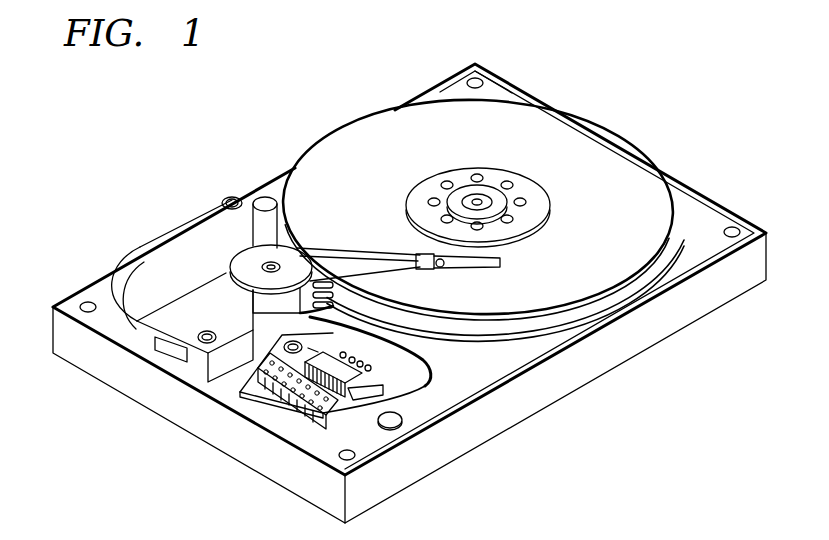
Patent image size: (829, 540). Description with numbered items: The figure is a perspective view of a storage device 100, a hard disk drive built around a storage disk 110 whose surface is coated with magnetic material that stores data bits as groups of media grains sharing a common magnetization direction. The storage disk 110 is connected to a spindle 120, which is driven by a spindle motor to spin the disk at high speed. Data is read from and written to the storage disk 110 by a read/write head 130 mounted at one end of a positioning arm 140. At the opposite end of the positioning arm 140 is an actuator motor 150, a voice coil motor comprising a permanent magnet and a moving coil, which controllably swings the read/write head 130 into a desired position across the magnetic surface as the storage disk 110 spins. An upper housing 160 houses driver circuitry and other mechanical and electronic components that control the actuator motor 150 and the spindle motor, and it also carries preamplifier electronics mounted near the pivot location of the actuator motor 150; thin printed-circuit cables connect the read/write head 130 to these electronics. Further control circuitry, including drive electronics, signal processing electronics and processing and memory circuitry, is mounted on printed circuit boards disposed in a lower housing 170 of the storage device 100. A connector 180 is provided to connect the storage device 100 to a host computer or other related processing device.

The storage device 100 is at (188, 116).
The storage disk 110 is at (597, 137).
The spindle 120 is at (497, 198).
The read/write head 130 is at (470, 262).
The positioning arm 140 is at (330, 247).
The actuator motor 150 is at (253, 290).
The upper housing 160 is at (165, 250).
The lower housing 170 is at (435, 455).
The connector 180 is at (287, 397).